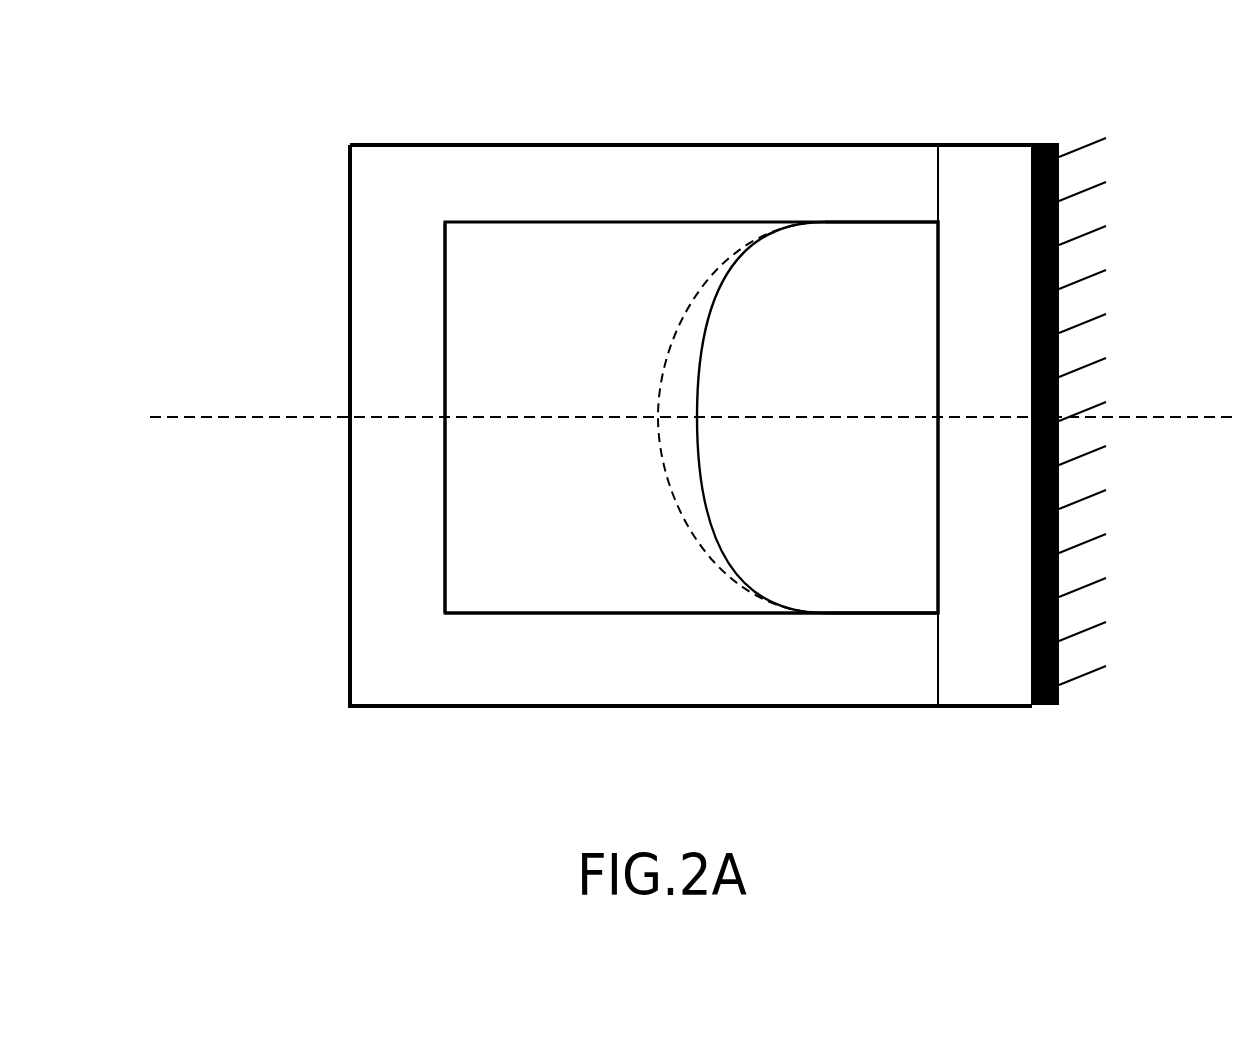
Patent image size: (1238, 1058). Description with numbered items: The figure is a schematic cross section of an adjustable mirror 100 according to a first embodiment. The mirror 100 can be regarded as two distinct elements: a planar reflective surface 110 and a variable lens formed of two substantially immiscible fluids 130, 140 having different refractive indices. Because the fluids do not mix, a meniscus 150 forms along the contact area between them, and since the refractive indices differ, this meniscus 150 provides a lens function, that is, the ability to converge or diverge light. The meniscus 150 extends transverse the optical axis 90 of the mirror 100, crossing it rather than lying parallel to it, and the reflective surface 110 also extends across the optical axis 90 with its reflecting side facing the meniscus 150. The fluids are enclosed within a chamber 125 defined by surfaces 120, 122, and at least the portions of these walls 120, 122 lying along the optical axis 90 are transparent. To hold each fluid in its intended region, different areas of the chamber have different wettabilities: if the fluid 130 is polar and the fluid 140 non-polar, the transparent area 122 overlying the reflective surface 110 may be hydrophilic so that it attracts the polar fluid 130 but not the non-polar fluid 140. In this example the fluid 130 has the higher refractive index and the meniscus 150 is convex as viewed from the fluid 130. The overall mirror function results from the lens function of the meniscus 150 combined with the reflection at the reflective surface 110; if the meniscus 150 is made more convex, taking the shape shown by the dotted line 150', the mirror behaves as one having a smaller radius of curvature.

The optical axis 90 is at (200, 422).
The adjustable mirror 100 is at (1124, 689).
The reflective surface 110 is at (1044, 141).
The surface 120 is at (517, 222).
The transparent area 122 is at (940, 568).
The chamber 125 is at (675, 590).
The fluid 130 is at (875, 578).
The fluid 140 is at (574, 578).
The meniscus 150 is at (761, 324).
The dotted line 150' is at (741, 324).